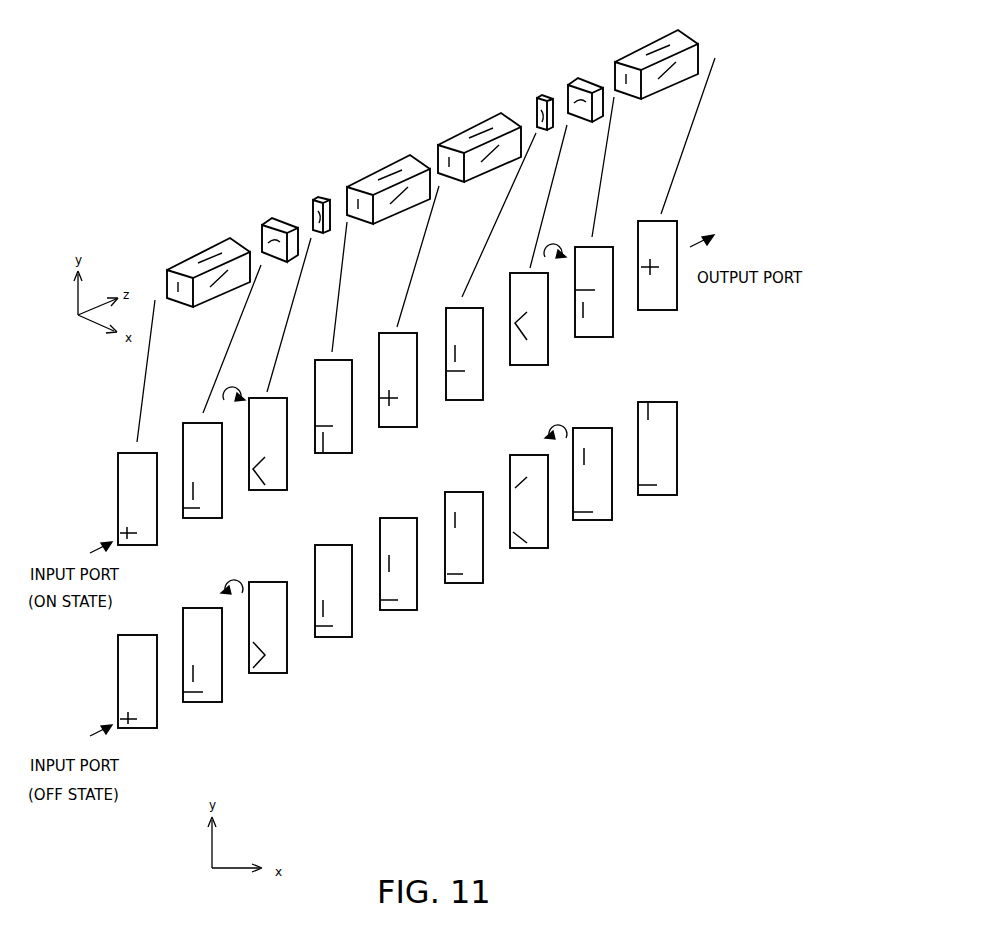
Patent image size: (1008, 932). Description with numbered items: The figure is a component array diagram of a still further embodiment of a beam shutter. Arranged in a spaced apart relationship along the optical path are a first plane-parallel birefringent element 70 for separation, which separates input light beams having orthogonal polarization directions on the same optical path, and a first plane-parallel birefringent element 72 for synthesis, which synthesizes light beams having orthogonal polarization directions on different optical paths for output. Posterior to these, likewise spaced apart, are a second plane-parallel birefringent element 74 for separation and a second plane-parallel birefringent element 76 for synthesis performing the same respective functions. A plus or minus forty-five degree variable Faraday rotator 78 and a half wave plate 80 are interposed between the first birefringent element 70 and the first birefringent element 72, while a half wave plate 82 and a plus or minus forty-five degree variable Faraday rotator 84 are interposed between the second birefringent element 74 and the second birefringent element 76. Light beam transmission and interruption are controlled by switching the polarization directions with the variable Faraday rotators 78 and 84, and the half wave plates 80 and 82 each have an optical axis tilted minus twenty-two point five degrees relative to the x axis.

The first plane-parallel birefringent element for separation 70 is at (208, 250).
The first plane-parallel birefringent element for synthesis 72 is at (356, 177).
The second plane-parallel birefringent element for separation 74 is at (466, 136).
The second plane-parallel birefringent element for synthesis 76 is at (652, 43).
The variable Faraday rotator 78 is at (265, 224).
The ½ wave plate 80 is at (313, 212).
The ½ wave plate 82 is at (545, 96).
The variable Faraday rotator 84 is at (580, 78).